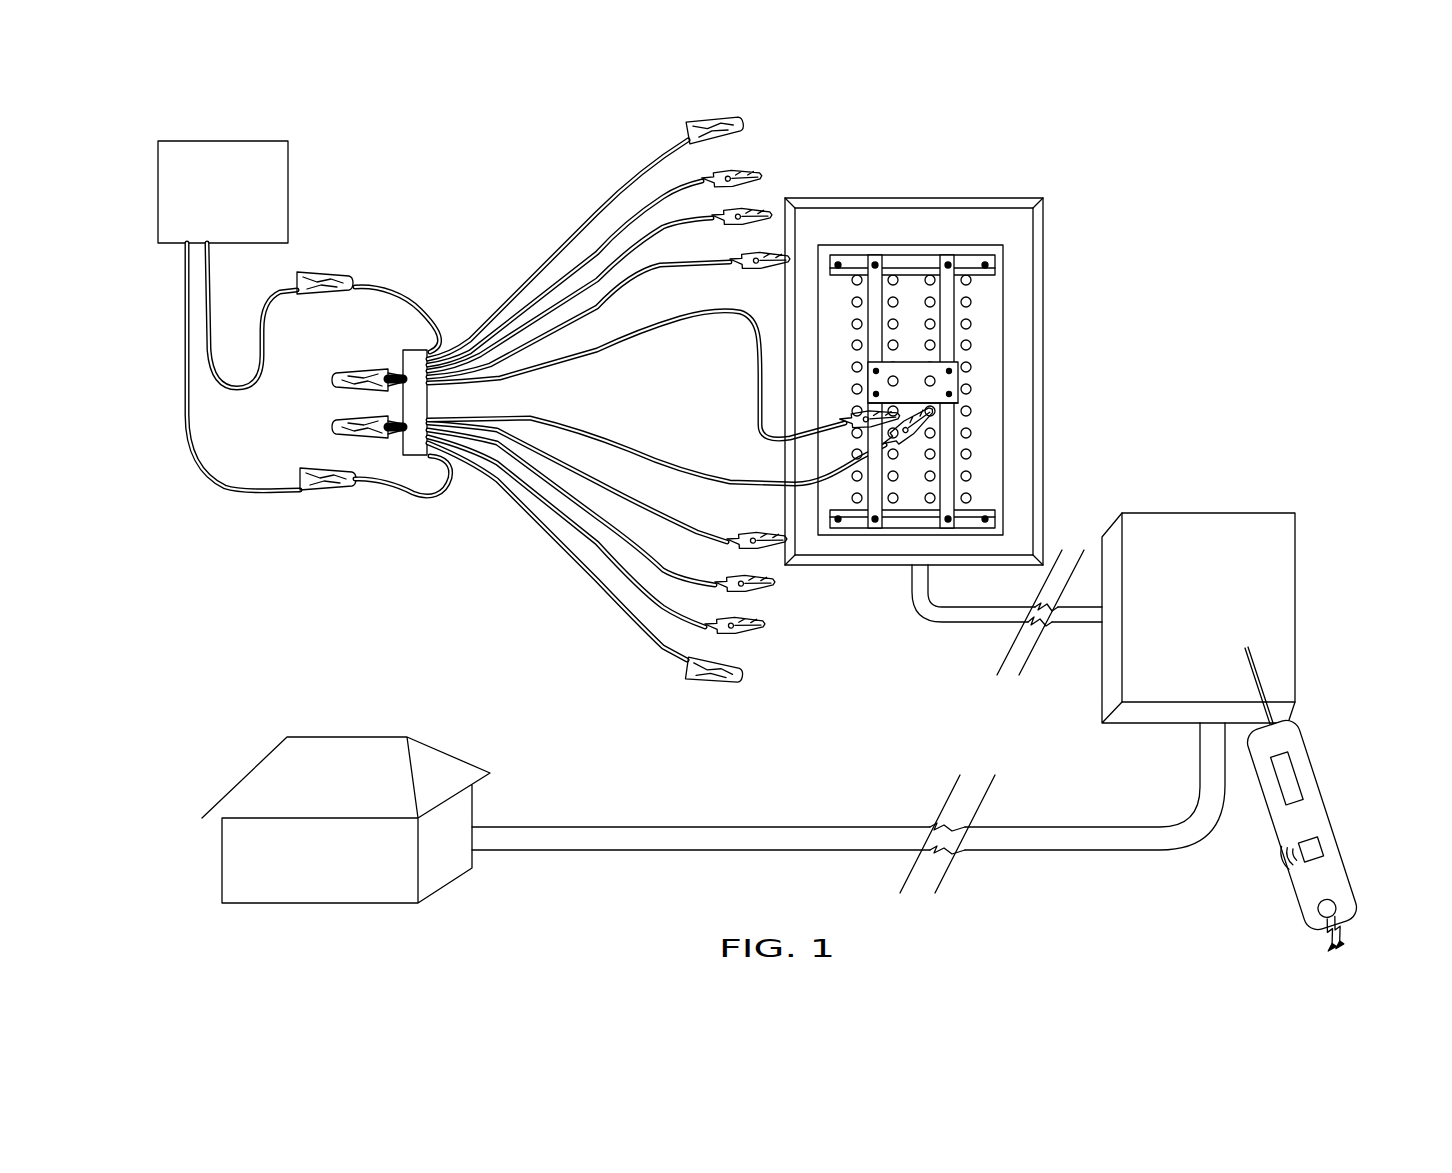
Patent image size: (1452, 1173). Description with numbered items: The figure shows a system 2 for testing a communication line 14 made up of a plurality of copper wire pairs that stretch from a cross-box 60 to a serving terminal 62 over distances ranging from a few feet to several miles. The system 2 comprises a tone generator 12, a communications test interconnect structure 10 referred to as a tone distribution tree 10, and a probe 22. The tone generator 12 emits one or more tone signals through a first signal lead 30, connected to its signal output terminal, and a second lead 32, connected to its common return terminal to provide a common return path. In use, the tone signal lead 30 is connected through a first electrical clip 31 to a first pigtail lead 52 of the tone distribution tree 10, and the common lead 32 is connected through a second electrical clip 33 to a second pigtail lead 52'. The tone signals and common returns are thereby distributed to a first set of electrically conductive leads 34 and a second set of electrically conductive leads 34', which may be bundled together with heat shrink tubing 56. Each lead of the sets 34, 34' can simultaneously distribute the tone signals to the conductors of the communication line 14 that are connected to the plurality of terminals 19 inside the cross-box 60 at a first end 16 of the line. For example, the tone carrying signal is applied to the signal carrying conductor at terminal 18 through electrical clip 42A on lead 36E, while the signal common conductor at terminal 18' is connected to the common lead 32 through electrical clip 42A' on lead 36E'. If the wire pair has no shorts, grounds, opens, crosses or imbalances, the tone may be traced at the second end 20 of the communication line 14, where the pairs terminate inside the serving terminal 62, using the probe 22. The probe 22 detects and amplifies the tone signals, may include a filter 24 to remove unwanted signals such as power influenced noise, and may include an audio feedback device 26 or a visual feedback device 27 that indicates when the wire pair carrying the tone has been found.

The system 2 is at (910, 163).
The communications test interconnect structure 10 is at (545, 187).
The tone generator 12 is at (223, 140).
The communication line 14 is at (945, 625).
The first end 16 is at (888, 578).
The terminal 18 is at (991, 385).
The terminal 18' is at (994, 396).
The plurality of terminals 19 is at (982, 305).
The second end 20 is at (1084, 646).
The probe 22 is at (1300, 745).
The filter 24 is at (1300, 790).
The audio feedback device 26 is at (1300, 850).
The visual feedback device 27 is at (1318, 908).
The first signal lead 30 is at (247, 392).
The first electrical clip 31 is at (323, 273).
The second lead 32 is at (213, 483).
The second electrical clip 33 is at (323, 473).
The first set of electrically conductive leads 34 is at (609, 254).
The second set of electrically conductive leads 34' is at (607, 549).
The lead 36E is at (636, 375).
The lead 36E' is at (656, 463).
The electrical clip 42A is at (808, 357).
The electrical clip 42A' is at (882, 502).
The first pigtail lead 52 is at (408, 303).
The second pigtail lead 52' is at (401, 499).
The heat shrink tubing 56 is at (412, 350).
The cross-box 60 is at (1022, 198).
The serving terminal 62 is at (1240, 513).